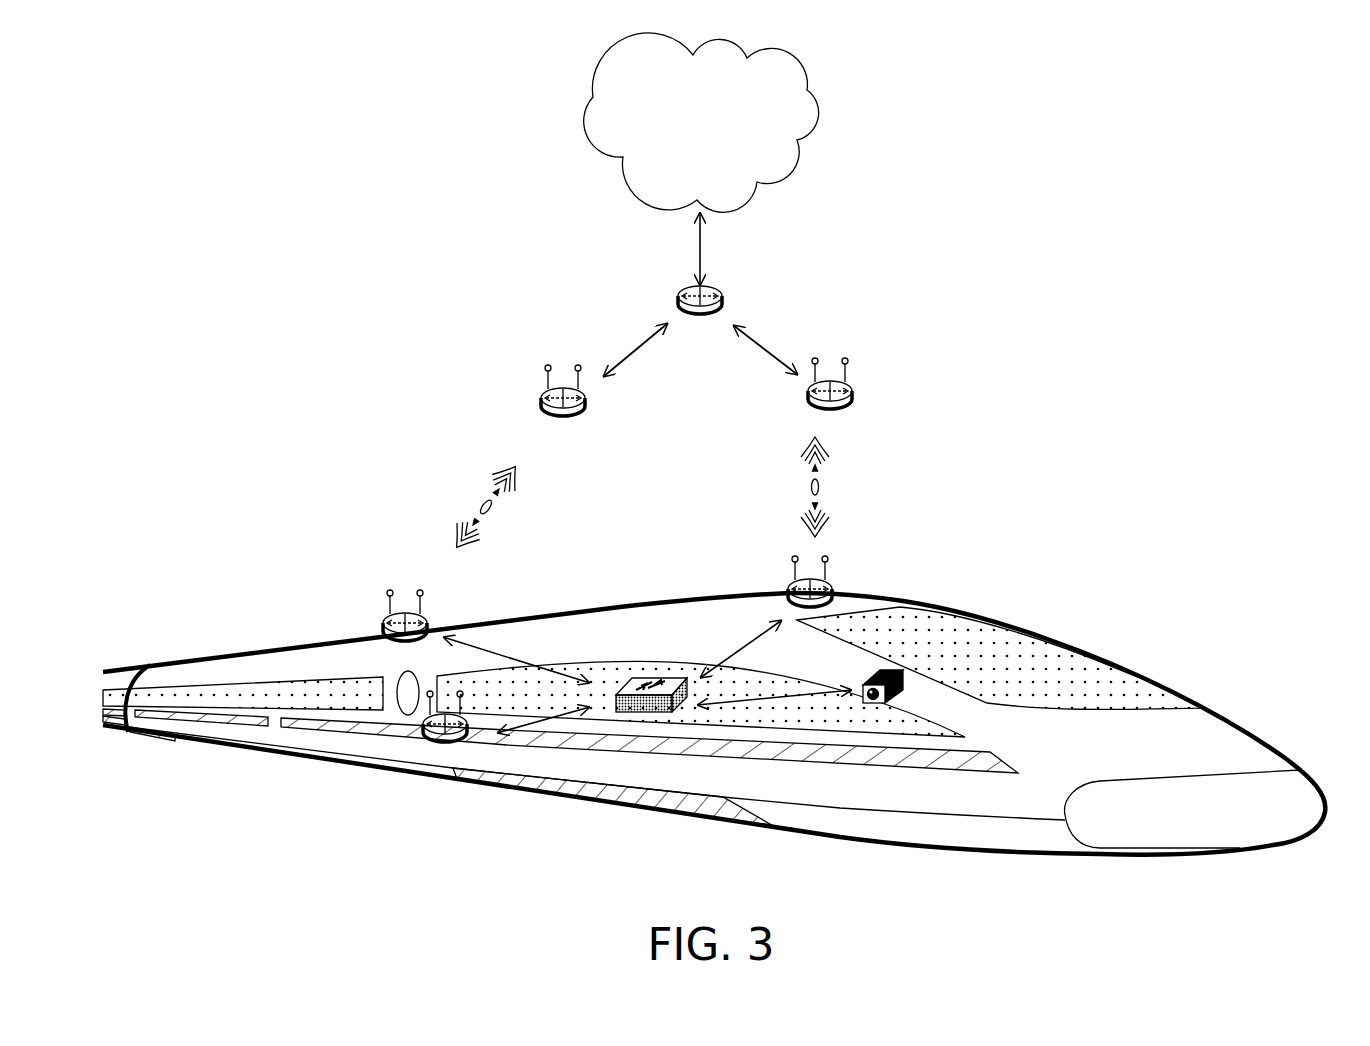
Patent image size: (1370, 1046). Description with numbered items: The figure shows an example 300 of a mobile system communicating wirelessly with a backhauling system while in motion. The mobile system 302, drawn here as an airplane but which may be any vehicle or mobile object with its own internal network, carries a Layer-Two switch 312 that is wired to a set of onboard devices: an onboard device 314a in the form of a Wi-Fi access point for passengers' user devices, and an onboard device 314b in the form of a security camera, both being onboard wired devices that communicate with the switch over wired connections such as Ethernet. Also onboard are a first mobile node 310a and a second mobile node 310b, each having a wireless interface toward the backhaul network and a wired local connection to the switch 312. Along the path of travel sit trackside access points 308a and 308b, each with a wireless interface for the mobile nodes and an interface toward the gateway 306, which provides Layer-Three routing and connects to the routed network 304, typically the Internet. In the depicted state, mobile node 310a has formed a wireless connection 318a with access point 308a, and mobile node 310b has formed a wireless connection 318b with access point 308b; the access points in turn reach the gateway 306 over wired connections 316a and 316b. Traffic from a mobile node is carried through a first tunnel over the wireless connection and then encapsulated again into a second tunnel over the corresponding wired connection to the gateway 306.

The example of a mobile system communicating wirelessly 300 is at (1254, 118).
The mobile system 302 is at (1048, 633).
The L3-routed network 304 is at (684, 164).
The gateway 306 is at (722, 298).
The trackside access point 308a is at (852, 385).
The trackside access point 308b is at (548, 388).
The first mobile node 310a is at (830, 586).
The second mobile node 310b is at (383, 620).
The Layer-2 switch 312 is at (657, 672).
The onboard device 314a is at (445, 748).
The onboard device 314b is at (895, 705).
The connection 316a is at (788, 334).
The connection 316b is at (611, 335).
The wireless connection 318a is at (869, 490).
The wireless connection 318b is at (448, 488).